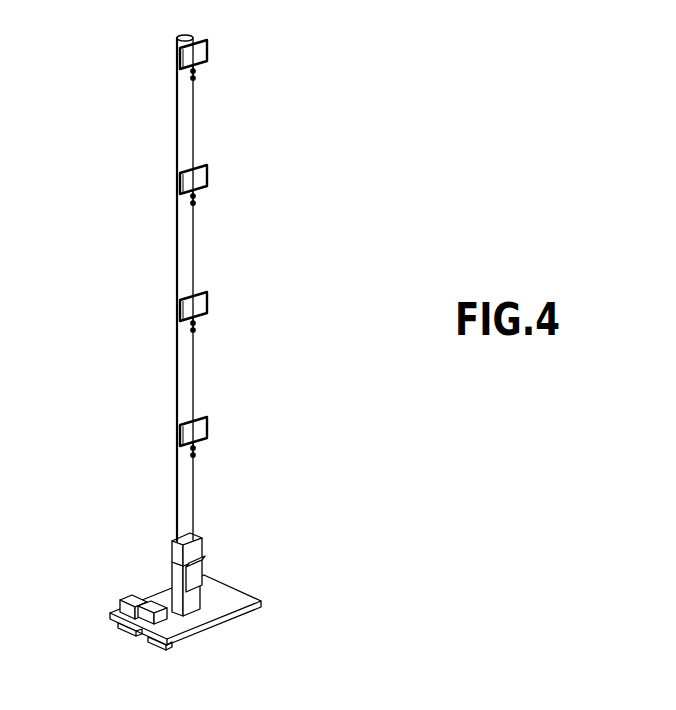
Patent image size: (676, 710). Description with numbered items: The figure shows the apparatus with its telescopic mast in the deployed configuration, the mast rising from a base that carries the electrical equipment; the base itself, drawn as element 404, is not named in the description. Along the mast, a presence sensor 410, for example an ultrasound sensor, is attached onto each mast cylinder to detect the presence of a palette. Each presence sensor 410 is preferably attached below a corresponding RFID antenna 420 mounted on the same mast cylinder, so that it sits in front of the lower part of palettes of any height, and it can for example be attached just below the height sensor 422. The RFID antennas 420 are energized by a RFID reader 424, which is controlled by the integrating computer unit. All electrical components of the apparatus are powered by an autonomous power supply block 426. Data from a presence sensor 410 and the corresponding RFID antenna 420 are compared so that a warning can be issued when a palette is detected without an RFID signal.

The base plate 404 is at (142, 625).
The presence sensor 410 is at (200, 203).
The RFID antenna 420 is at (178, 178).
The height sensor 422 is at (200, 69).
The RFID reader 424 is at (207, 573).
The autonomous power supply block 426 is at (122, 593).